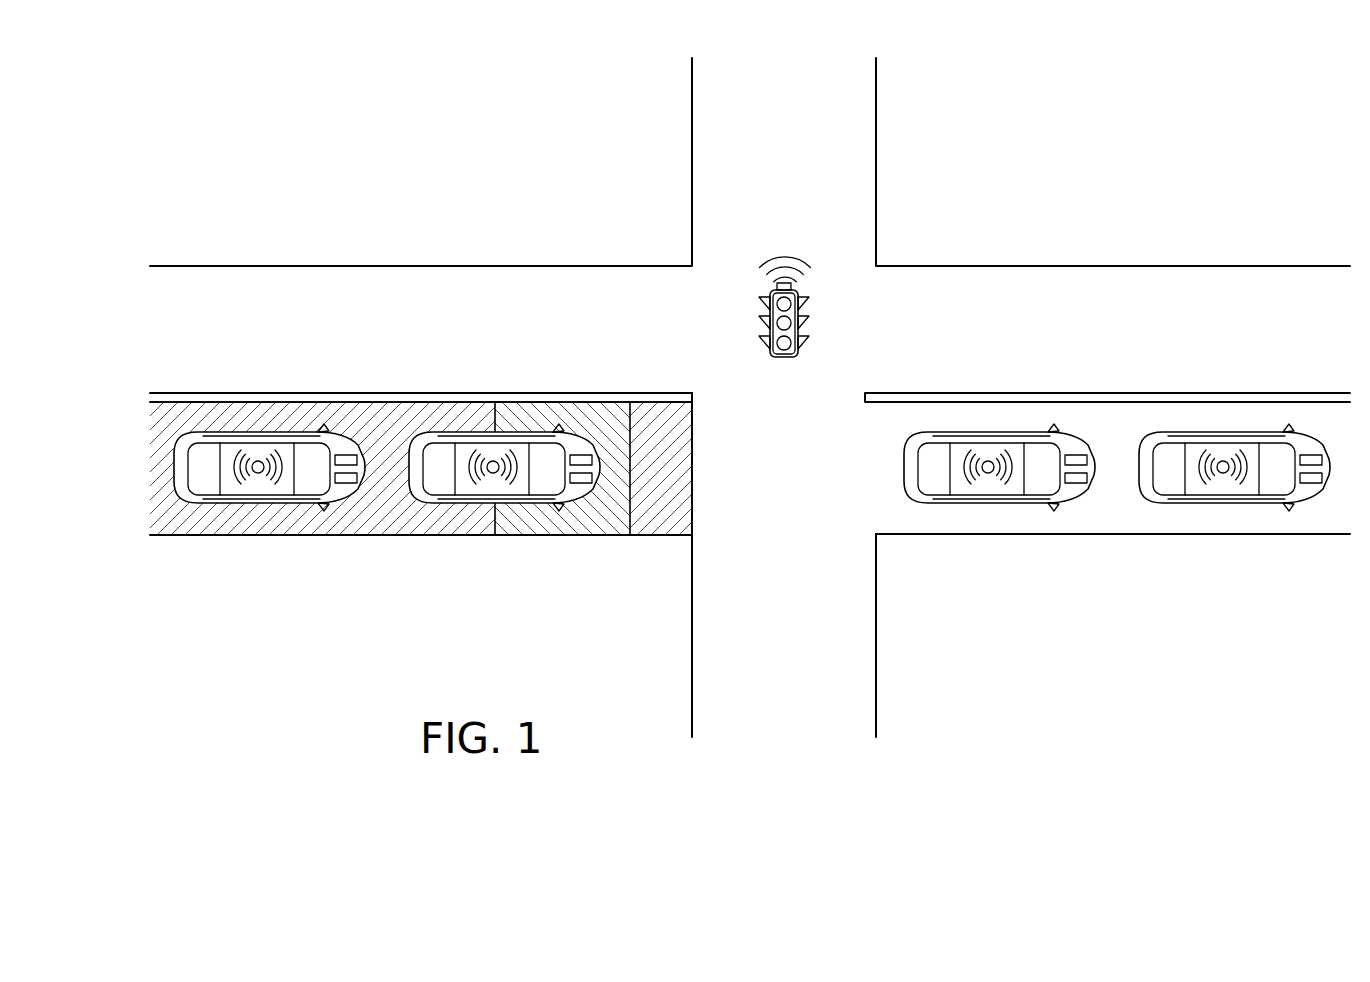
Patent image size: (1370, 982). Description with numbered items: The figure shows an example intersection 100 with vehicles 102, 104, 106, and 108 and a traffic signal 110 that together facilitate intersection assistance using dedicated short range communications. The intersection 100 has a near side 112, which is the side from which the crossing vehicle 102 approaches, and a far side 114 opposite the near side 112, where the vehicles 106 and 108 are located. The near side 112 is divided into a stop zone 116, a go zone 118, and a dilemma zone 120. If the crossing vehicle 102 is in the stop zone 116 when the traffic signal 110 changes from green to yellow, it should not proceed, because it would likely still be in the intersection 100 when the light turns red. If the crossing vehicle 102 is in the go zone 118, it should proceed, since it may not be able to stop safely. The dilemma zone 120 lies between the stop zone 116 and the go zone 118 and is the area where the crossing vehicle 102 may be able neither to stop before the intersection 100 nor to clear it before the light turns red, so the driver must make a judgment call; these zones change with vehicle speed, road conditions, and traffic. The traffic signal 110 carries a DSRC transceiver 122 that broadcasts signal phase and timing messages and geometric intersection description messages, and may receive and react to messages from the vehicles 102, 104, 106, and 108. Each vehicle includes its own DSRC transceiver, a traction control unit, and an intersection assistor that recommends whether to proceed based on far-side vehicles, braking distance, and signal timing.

The intersection 100 is at (896, 250).
The crossing vehicle 102 is at (504, 476).
The vehicle 104 is at (269, 476).
The vehicle 106 is at (999, 476).
The vehicle 108 is at (1234, 476).
The traffic signal 110 is at (819, 330).
The near side 112 is at (652, 348).
The far side 114 is at (905, 352).
The stop zone 116 is at (385, 537).
The go zone 118 is at (683, 468).
The dilemma zone 120 is at (610, 532).
The DSRC transceiver 122 is at (792, 288).